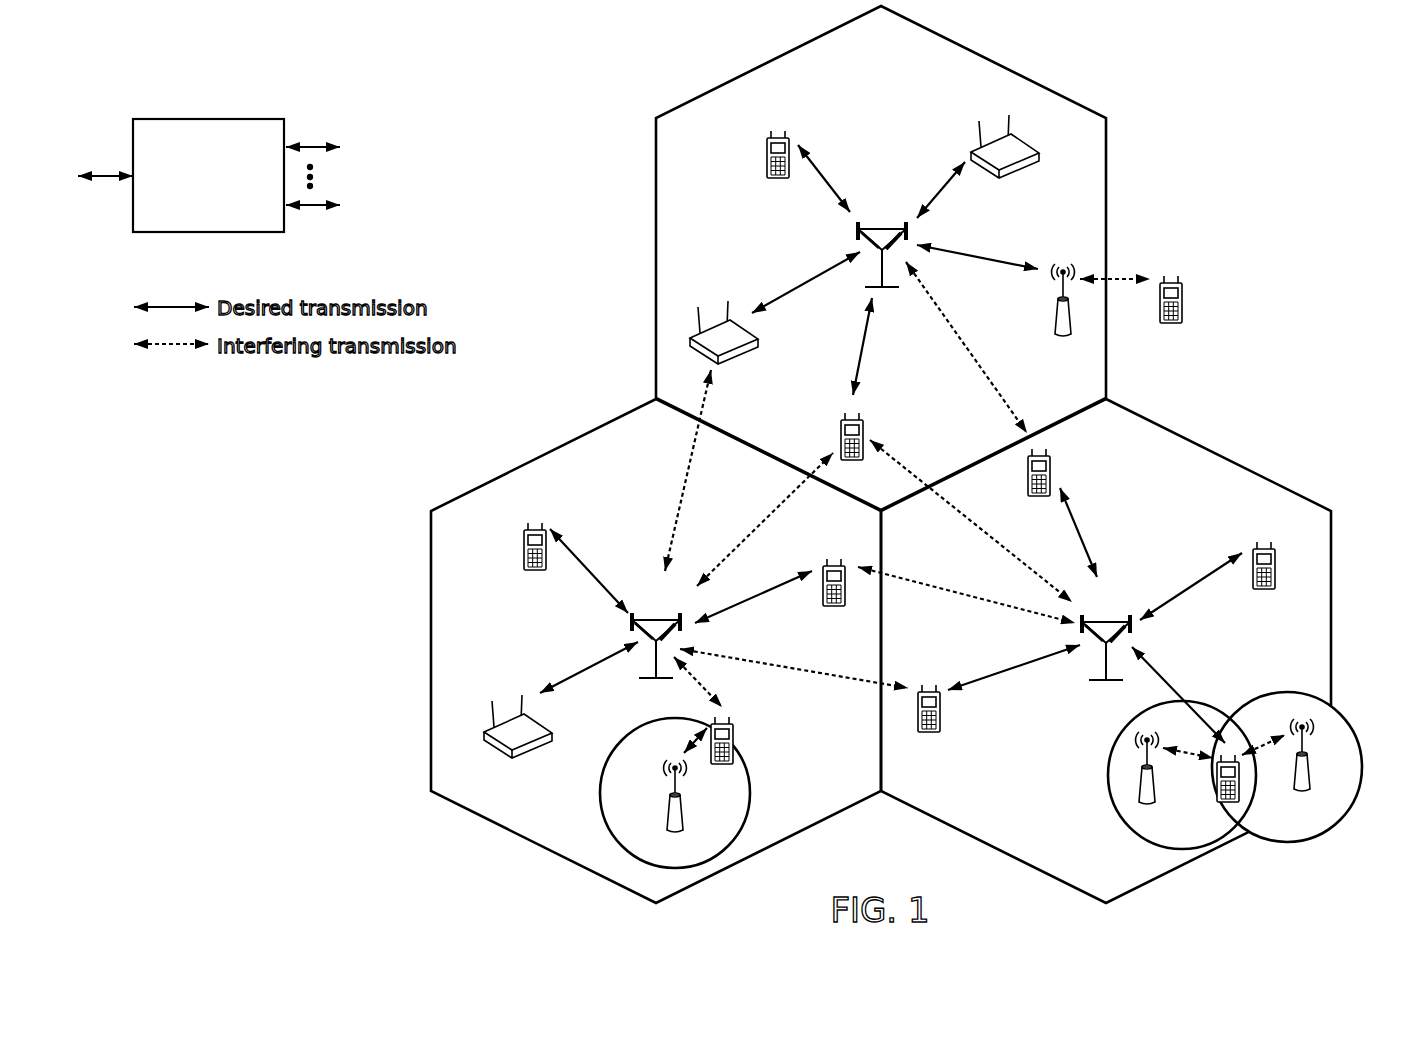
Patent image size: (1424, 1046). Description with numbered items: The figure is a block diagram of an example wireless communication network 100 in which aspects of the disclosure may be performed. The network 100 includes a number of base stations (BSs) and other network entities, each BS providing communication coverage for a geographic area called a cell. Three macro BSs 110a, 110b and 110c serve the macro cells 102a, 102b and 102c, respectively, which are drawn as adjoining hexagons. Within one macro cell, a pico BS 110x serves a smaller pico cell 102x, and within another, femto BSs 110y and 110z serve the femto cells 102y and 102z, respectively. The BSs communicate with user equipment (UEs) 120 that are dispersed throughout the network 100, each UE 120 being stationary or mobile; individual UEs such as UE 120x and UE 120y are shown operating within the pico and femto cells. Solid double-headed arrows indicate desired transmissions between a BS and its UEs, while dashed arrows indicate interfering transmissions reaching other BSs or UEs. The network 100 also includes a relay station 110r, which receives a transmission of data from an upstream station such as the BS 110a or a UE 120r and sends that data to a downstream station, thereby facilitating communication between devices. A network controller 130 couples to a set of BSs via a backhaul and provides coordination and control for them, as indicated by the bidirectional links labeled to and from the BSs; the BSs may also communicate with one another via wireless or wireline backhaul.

The wireless communication network 100 is at (1264, 79).
The macro cell 102a is at (988, 60).
The macro cell 102b is at (548, 453).
The macro cell 102c is at (1216, 455).
The pico cell 102x is at (636, 734).
The femto cell 102y is at (1112, 748).
The femto cell 102z is at (1277, 692).
The macro base station 110a is at (877, 226).
The macro base station 110b is at (653, 618).
The macro base station 110c is at (1103, 619).
The relay station 110r is at (1052, 322).
The pico base station 110x is at (684, 826).
The femto base station 110y is at (1152, 800).
The femto base station 110z is at (1310, 786).
The user equipment 120 is at (768, 146).
The user equipment 120r is at (1180, 327).
The user equipment 120x is at (733, 728).
The user equipment 120y is at (1217, 802).
The network controller 130 is at (204, 118).